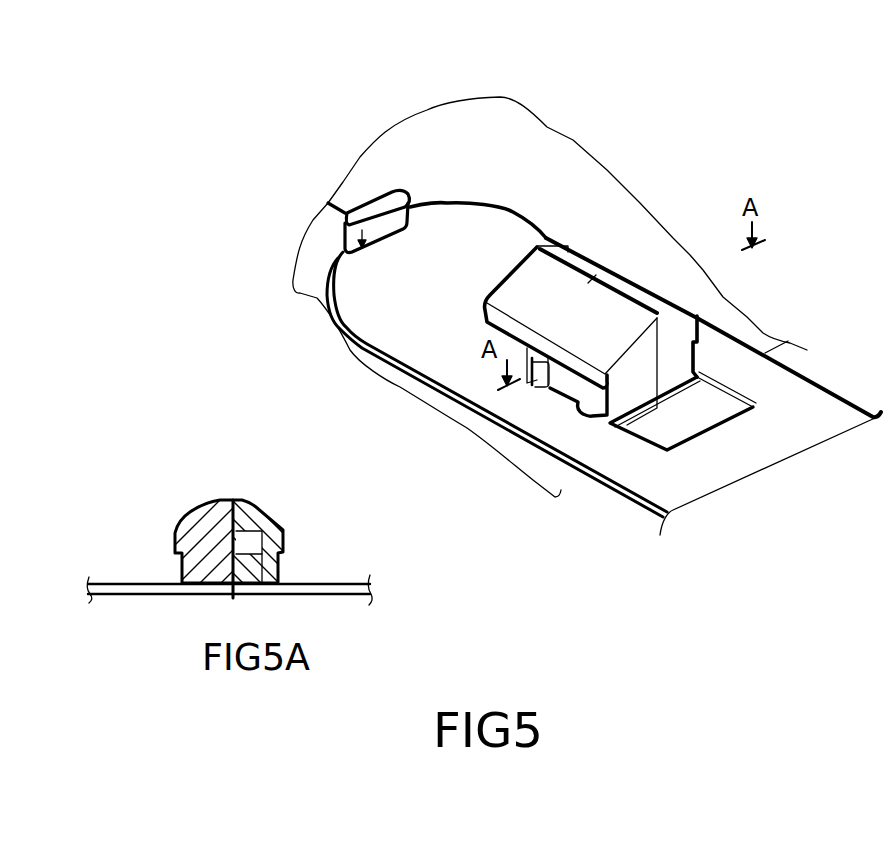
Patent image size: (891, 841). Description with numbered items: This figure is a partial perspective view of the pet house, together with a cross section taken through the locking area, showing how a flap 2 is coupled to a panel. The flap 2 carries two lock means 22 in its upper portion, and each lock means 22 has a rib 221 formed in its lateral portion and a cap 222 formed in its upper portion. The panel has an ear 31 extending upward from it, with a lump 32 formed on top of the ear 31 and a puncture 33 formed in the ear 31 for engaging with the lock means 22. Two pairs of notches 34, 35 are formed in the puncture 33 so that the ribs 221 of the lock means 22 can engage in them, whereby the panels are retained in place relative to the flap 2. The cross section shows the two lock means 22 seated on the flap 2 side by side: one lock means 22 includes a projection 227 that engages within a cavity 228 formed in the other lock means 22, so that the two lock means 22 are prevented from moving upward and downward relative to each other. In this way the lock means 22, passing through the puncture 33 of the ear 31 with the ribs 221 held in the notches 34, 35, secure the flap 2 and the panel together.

In FIG. 5, the flap 2 is at (450, 120).
In FIG. 5A, the flap 2 is at (115, 589).
In FIG. 5, the lock means 22 is at (566, 362).
In FIG. 5A, the lock means 22 is at (251, 506).
In FIG. 5, the rib 221 is at (535, 380).
In FIG. 5, the cap 222 is at (532, 258).
In FIG. 5A, the projection 227 is at (250, 545).
In FIG. 5A, the cavity 228 is at (268, 538).
In FIG. 5, the ear 31 is at (813, 400).
In FIG. 5, the lump 32 is at (383, 238).
In FIG. 5, the puncture 33 is at (700, 430).
In FIG. 5, the notch 34 is at (588, 407).
In FIG. 5, the notch 35 is at (545, 388).